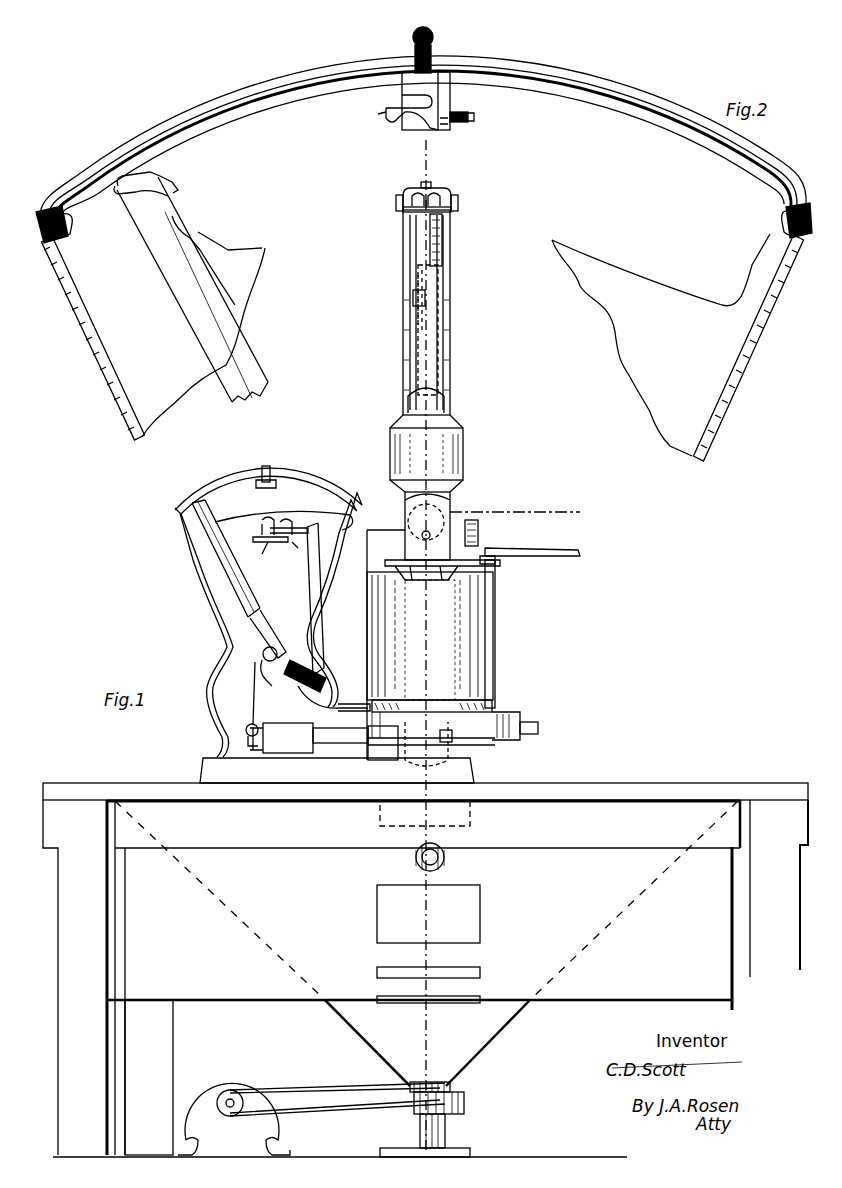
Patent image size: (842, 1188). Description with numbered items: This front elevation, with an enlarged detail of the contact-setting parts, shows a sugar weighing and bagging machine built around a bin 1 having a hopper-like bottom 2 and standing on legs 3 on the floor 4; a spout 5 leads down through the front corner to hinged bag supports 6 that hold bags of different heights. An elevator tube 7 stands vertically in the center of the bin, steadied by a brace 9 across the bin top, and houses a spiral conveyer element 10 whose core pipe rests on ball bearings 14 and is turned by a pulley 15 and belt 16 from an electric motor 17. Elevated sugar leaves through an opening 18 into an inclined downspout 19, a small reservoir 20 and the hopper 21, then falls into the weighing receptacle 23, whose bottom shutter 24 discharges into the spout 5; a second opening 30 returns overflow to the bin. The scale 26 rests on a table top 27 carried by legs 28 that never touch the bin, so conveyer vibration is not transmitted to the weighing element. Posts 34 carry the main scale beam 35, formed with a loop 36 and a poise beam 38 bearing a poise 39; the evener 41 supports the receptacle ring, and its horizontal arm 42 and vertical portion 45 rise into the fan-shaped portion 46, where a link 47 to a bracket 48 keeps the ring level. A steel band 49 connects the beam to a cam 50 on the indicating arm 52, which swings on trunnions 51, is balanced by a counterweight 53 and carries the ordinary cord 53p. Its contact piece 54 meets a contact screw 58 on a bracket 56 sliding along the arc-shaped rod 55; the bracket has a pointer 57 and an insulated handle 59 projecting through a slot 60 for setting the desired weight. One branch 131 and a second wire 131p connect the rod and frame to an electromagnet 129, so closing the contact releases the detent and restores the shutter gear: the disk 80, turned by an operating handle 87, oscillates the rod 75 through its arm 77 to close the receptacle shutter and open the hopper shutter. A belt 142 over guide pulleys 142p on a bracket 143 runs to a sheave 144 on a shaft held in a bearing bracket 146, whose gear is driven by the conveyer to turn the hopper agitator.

In FIG. 1, the bin 1 is at (396, 1002).
In FIG. 1, the hopper-like bottom 2 is at (492, 1048).
In FIG. 2, the legs 3 is at (418, 179).
In FIG. 1, the legs 3 is at (174, 1030).
In FIG. 1, the floor 4 is at (550, 1152).
In FIG. 1, the spout 5 is at (446, 850).
In FIG. 1, the hinged bag supports 6 is at (478, 1000).
In FIG. 2, the elevator tube 7 is at (420, 244).
In FIG. 1, the elevator tube 7 is at (452, 860).
In FIG. 1, the brace 9 is at (476, 814).
In FIG. 1, the spiral conveyer element 10 is at (523, 502).
In FIG. 1, the ball bearings 14 is at (455, 1134).
In FIG. 1, the pulley 15 is at (466, 1082).
In FIG. 1, the belt 16 is at (466, 1102).
In FIG. 1, the electric motor 17 is at (262, 1062).
In FIG. 2, the opening 18 is at (408, 308).
In FIG. 2, the inclined downspout 19 is at (440, 346).
In FIG. 1, the small reservoir 20 is at (462, 458).
In FIG. 1, the hopper 21 is at (452, 514).
In FIG. 1, the weighing receptacle 23 is at (486, 636).
In FIG. 1, the shutter 24 is at (455, 750).
In FIG. 1, the scale 26 is at (473, 770).
In FIG. 1, the table top 27 is at (732, 776).
In FIG. 1, the legs 28 is at (425, 977).
In FIG. 2, the opening 30 is at (448, 252).
In FIG. 1, the posts 34 is at (398, 758).
In FIG. 1, the main scale beam 35 is at (343, 755).
In FIG. 1, the loop 36 is at (500, 742).
In FIG. 1, the poise beam 38 is at (532, 727).
In FIG. 1, the poise 39 is at (510, 712).
In FIG. 1, the evener 41 is at (492, 708).
In FIG. 1, the horizontal arm 42 is at (352, 705).
In FIG. 1, the vertical portion 45 is at (314, 568).
In FIG. 2, the fan-shaped portion 46 is at (736, 352).
In FIG. 1, the fan-shaped portion 46 is at (328, 617).
In FIG. 1, the link 47 is at (292, 544).
In FIG. 1, the bracket 48 is at (288, 526).
In FIG. 1, the steel band 49 is at (252, 696).
In FIG. 1, the cam 50 is at (262, 674).
In FIG. 1, the trunnions 51 is at (262, 655).
In FIG. 2, the indicating arm 52 is at (246, 332).
In FIG. 1, the indicating arm 52 is at (248, 594).
In FIG. 1, the counterweight 53 is at (296, 680).
In FIG. 2, the cord 53p is at (154, 252).
In FIG. 1, the cord 53p is at (232, 592).
In FIG. 2, the contact piece 54 is at (178, 188).
In FIG. 2, the arc-shaped rod 55 is at (675, 144).
In FIG. 1, the arc-shaped rod 55 is at (352, 466).
In FIG. 2, the bracket 56 is at (448, 90).
In FIG. 1, the bracket 56 is at (272, 466).
In FIG. 2, the pointer 57 is at (392, 136).
In FIG. 2, the contact screw 58 is at (466, 128).
In FIG. 2, the insulated handle 59 is at (434, 37).
In FIG. 2, the slot 60 is at (500, 58).
In FIG. 1, the rod 75 is at (496, 604).
In FIG. 1, the arm 77 is at (490, 572).
In FIG. 1, the disk 80 is at (498, 560).
In FIG. 1, the operating handle 87 is at (524, 550).
In FIG. 1, the electromagnet 129 is at (478, 532).
In FIG. 2, the wire 131 is at (788, 298).
In FIG. 1, the wire 131 is at (382, 510).
In FIG. 1, the wire 131p is at (408, 542).
In FIG. 2, the belt 142 is at (402, 382).
In FIG. 2, the guide pulleys 142p is at (446, 206).
In FIG. 2, the bracket 143 is at (404, 224).
In FIG. 2, the sheave 144 is at (446, 186).
In FIG. 2, the bearing bracket 146 is at (458, 216).